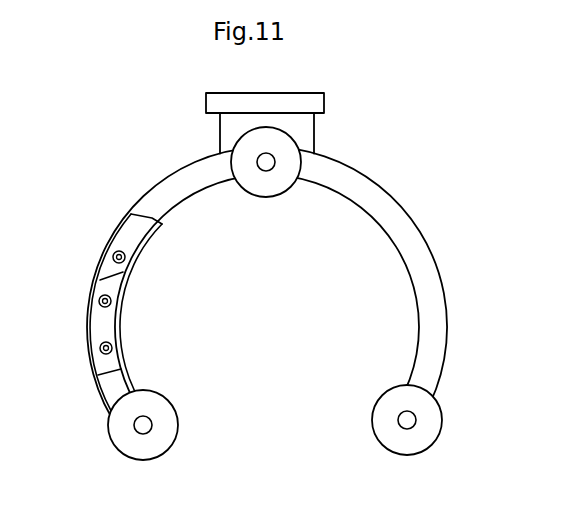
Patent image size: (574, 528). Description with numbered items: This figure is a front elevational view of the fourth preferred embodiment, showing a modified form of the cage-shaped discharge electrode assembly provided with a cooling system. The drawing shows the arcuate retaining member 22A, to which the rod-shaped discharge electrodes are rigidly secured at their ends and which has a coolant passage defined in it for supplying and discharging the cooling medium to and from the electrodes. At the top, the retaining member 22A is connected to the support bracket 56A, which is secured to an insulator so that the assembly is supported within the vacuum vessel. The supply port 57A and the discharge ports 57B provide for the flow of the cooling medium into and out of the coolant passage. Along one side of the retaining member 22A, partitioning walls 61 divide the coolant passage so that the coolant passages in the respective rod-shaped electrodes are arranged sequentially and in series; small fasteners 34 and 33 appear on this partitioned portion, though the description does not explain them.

The retaining member 22A is at (413, 293).
The support bracket 56A is at (305, 126).
The supply port 57A is at (267, 171).
The discharge port 57B is at (134, 425).
The partitioning wall 61 is at (112, 364).
The screw 34 is at (111, 301).
The screw 33 is at (112, 348).